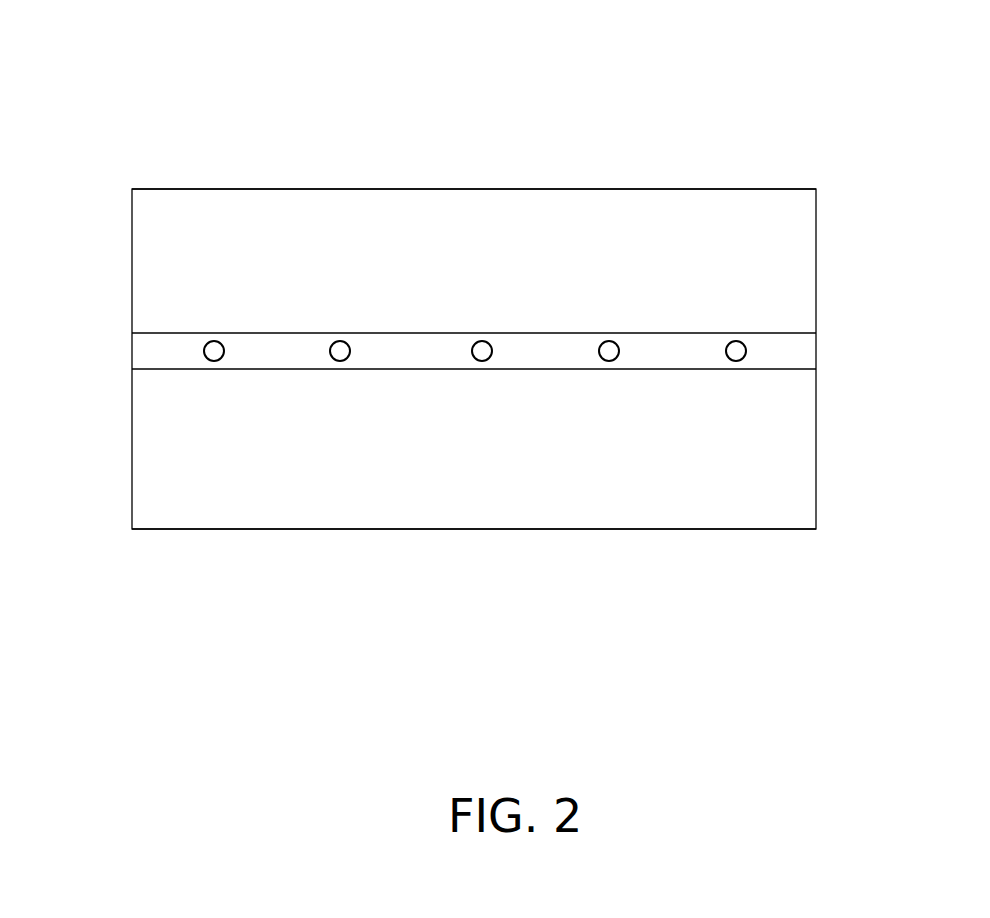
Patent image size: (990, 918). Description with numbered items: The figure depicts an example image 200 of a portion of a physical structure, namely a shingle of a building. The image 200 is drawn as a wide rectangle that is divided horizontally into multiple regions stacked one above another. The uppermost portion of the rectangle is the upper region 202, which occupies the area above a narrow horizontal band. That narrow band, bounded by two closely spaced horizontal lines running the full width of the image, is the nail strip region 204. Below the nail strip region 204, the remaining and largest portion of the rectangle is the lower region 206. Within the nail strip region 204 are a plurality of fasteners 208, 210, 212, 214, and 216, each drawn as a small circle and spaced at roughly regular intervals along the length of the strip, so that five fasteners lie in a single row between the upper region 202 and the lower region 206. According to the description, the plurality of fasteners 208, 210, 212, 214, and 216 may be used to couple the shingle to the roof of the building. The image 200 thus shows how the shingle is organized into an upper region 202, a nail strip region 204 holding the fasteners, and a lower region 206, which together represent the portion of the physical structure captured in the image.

The image 200 is at (892, 95).
The upper region 202 is at (203, 205).
The nail strip region 204 is at (151, 347).
The lower region 206 is at (204, 514).
The fastener 208 is at (214, 341).
The fastener 210 is at (340, 341).
The fastener 212 is at (482, 341).
The fastener 214 is at (609, 341).
The fastener 216 is at (736, 341).